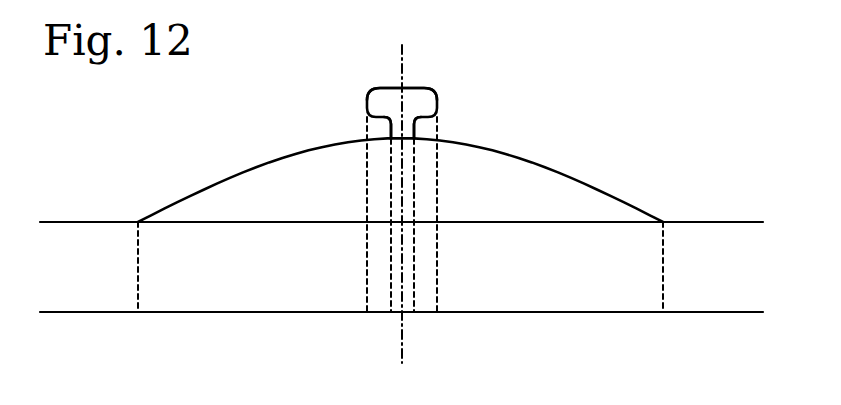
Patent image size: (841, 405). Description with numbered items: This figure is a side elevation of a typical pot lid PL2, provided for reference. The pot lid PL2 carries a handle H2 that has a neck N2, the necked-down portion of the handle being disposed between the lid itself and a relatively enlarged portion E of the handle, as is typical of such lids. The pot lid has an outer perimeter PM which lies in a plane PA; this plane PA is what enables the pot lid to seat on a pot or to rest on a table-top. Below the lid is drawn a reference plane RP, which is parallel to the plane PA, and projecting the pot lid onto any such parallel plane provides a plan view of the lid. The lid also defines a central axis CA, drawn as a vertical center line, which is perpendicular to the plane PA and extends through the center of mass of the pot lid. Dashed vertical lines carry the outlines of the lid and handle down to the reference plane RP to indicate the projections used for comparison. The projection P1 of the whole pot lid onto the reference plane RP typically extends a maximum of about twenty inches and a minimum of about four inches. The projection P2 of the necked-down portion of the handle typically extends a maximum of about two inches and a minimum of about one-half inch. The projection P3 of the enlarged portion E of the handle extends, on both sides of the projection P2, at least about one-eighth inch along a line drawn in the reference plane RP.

The central axis CA is at (400, 50).
The handle H2 is at (422, 80).
The enlarged portion E is at (387, 88).
The neck N2 is at (415, 128).
The pot lid PL2 is at (637, 157).
The plane PA is at (708, 222).
The outer perimeter PM is at (493, 223).
The reference plane RP is at (708, 312).
The projection of the pot lid P1 is at (138, 315).
The projection of the necked-down portion P2 is at (391, 313).
The projection of the enlarged portion P3 is at (367, 313).